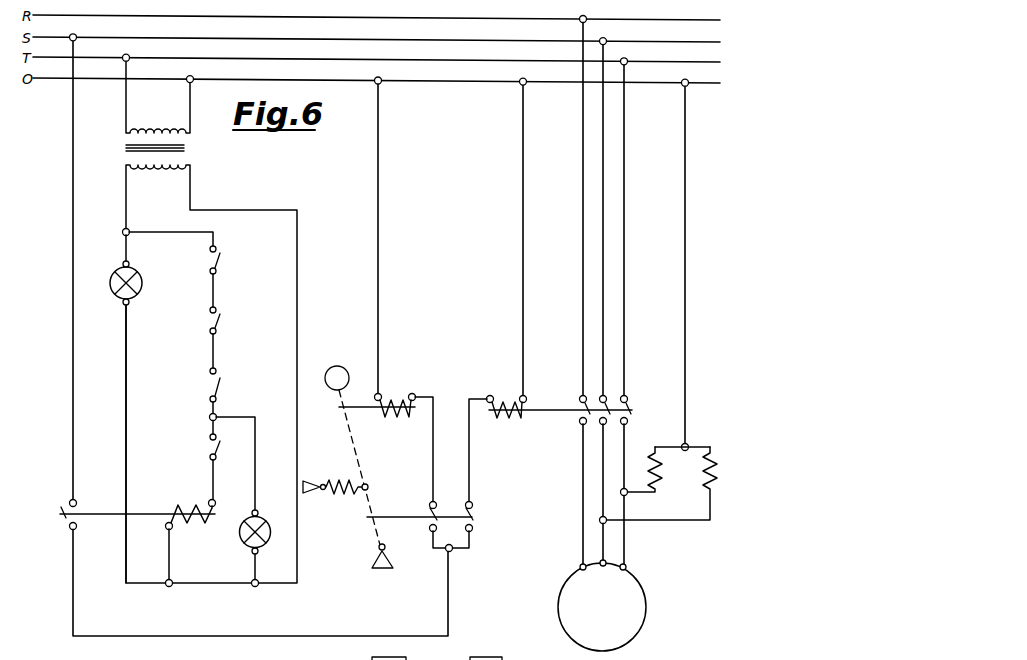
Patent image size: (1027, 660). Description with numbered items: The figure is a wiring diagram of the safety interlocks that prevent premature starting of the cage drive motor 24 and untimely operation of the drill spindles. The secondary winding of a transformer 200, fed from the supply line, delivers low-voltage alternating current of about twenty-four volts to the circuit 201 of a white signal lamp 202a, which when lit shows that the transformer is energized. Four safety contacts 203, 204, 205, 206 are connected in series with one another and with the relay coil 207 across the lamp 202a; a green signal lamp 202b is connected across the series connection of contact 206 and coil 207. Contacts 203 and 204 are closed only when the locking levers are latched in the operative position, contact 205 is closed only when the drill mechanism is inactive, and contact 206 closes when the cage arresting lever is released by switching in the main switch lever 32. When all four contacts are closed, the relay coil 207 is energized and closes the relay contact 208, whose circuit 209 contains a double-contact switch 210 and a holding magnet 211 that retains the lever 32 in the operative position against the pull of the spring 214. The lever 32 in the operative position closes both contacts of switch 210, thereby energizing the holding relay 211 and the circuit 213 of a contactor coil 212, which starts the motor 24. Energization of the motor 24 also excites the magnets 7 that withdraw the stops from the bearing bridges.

The transformer 200 is at (146, 105).
The circuit of signal lamp 201 is at (126, 201).
The signal lamp 202a is at (142, 284).
The signal lamp 202b is at (250, 537).
The safety contact 203 is at (218, 262).
The safety contact 204 is at (218, 323).
The safety contact 205 is at (218, 388).
The safety contact 206 is at (218, 446).
The relay coil 207 is at (196, 524).
The relay contact 208 is at (123, 515).
The circuit of contact 208 209 is at (73, 283).
The double-contact switch 210 is at (473, 519).
The holding magnet 211 is at (386, 440).
The contactor coil 212 is at (550, 441).
The circuit of contactor coil 213 is at (523, 317).
The spring 214 is at (335, 497).
The main switch lever 32 is at (359, 459).
The magnets 7 is at (649, 466).
The cage drive motor 24 is at (602, 334).